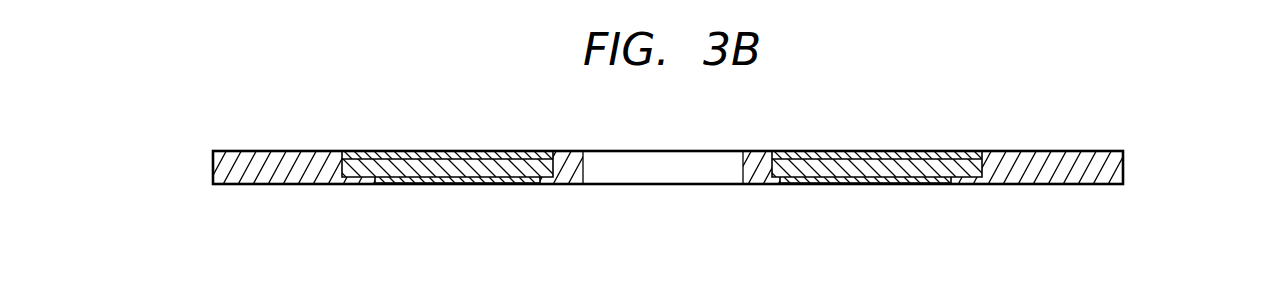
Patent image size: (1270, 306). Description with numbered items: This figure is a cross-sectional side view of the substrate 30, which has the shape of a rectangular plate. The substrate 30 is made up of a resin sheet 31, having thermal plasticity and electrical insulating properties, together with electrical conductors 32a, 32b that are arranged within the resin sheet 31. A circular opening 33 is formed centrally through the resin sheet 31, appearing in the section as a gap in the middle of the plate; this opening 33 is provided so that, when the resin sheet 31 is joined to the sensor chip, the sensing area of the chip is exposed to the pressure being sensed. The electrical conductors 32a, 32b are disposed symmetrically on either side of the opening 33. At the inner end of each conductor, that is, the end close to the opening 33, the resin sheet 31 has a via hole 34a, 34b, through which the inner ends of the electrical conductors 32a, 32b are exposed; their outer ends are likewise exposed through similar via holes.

The substrate 30 is at (1123, 164).
The resin sheet 31 is at (1057, 151).
The electrical conductor 32a is at (423, 151).
The electrical conductor 32b is at (885, 151).
The opening 33 is at (725, 151).
The via hole 34a is at (527, 185).
The via hole 34b is at (788, 185).